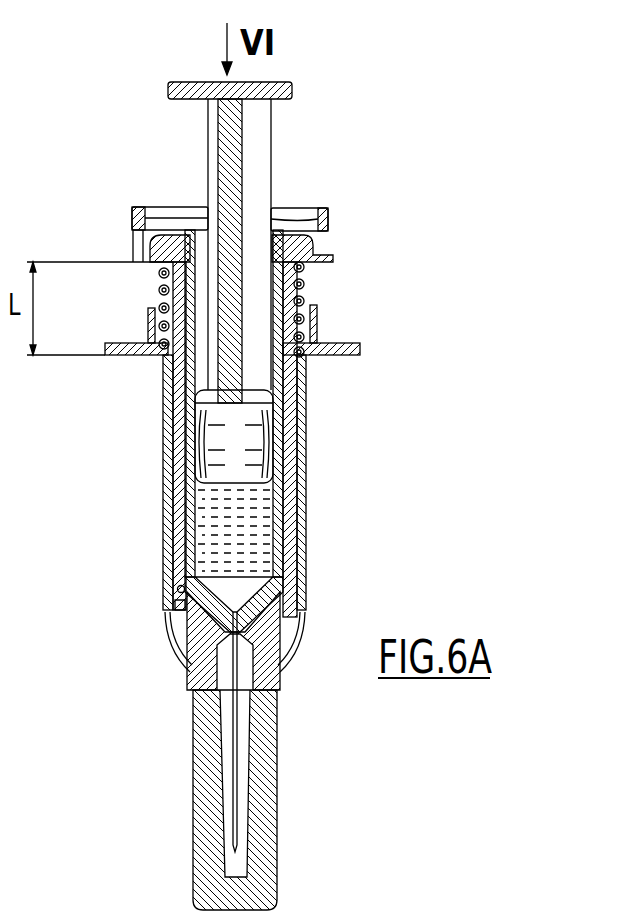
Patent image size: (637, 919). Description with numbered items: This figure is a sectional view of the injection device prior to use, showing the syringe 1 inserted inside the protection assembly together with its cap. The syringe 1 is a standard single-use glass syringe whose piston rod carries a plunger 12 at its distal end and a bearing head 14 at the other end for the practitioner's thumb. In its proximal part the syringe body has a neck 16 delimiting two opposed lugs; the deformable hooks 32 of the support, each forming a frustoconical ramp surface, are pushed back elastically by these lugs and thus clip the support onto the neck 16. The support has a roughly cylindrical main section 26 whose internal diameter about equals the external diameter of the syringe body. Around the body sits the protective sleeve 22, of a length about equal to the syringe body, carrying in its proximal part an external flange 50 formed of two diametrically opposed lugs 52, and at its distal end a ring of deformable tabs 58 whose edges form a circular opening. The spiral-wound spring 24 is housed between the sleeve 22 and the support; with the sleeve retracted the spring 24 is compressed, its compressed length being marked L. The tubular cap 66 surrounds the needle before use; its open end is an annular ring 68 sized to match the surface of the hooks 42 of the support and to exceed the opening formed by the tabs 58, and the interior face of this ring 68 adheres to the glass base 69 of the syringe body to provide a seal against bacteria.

The syringe 1 is at (294, 176).
The plunger 12 is at (283, 437).
The bearing head 14 is at (292, 89).
The neck 16 is at (313, 250).
The protective sleeve 22 is at (309, 504).
The spring 24 is at (305, 297).
The main section 26 is at (183, 491).
The deformable hooks 32 is at (178, 207).
The hooks 42 is at (177, 589).
The external flange 50 is at (375, 339).
The lugs 52 is at (116, 357).
The deformable tabs 58 is at (181, 651).
The cap 66 is at (267, 779).
The annular ring 68 is at (278, 629).
The glass base 69 is at (268, 656).